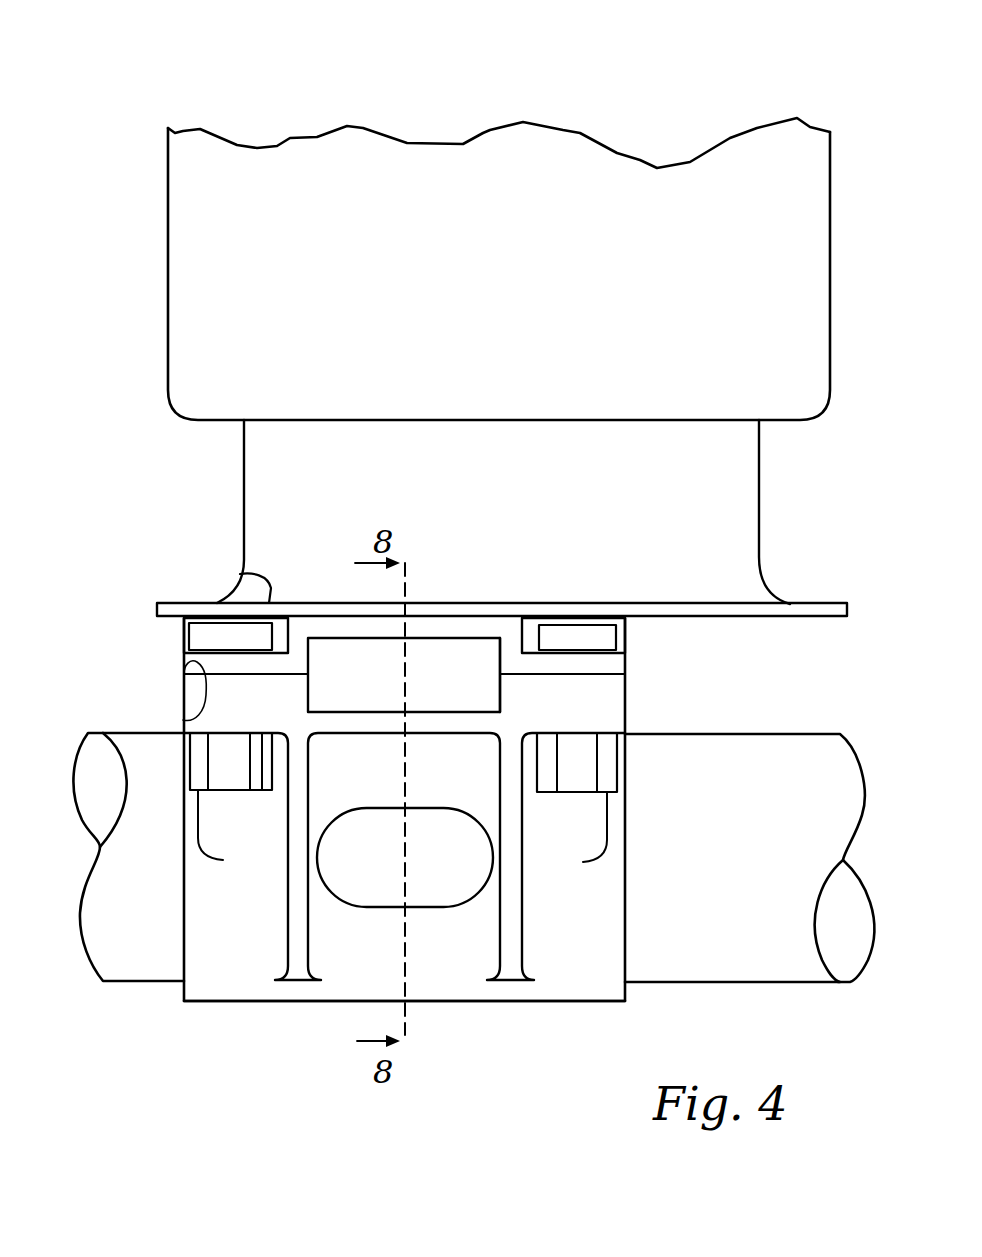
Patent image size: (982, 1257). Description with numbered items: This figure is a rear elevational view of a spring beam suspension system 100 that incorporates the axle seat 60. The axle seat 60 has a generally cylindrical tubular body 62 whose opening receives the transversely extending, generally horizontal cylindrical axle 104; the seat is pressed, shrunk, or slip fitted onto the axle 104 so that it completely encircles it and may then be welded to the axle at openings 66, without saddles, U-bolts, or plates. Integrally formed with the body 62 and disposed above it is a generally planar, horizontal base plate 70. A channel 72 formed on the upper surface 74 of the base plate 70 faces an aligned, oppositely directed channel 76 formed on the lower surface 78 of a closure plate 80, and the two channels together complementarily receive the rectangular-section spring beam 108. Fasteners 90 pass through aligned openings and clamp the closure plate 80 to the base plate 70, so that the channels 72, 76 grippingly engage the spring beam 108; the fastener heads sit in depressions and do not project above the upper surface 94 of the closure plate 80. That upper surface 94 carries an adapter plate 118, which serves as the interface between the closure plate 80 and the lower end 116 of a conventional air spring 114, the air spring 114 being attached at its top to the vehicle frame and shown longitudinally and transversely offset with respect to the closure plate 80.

The spring beam suspension system 100 is at (430, 213).
The air spring 114 is at (156, 240).
The lower end of the air spring 116 is at (759, 487).
The adapter plate 118 is at (848, 612).
The upper surface of the closure plate 94 is at (236, 577).
The fastener 90 is at (178, 632).
The closure plate 80 is at (418, 681).
The upper surface of the base plate 74 is at (184, 674).
The lower surface of the closure plate 78 is at (183, 720).
The channel 72 is at (404, 675).
The channel 76 is at (450, 639).
The spring beam 108 is at (500, 700).
The base plate 70 is at (636, 710).
The tubular body 62 is at (640, 875).
The openings 66 is at (385, 907).
The axle seat 60 is at (543, 1036).
The axle 104 is at (725, 983).